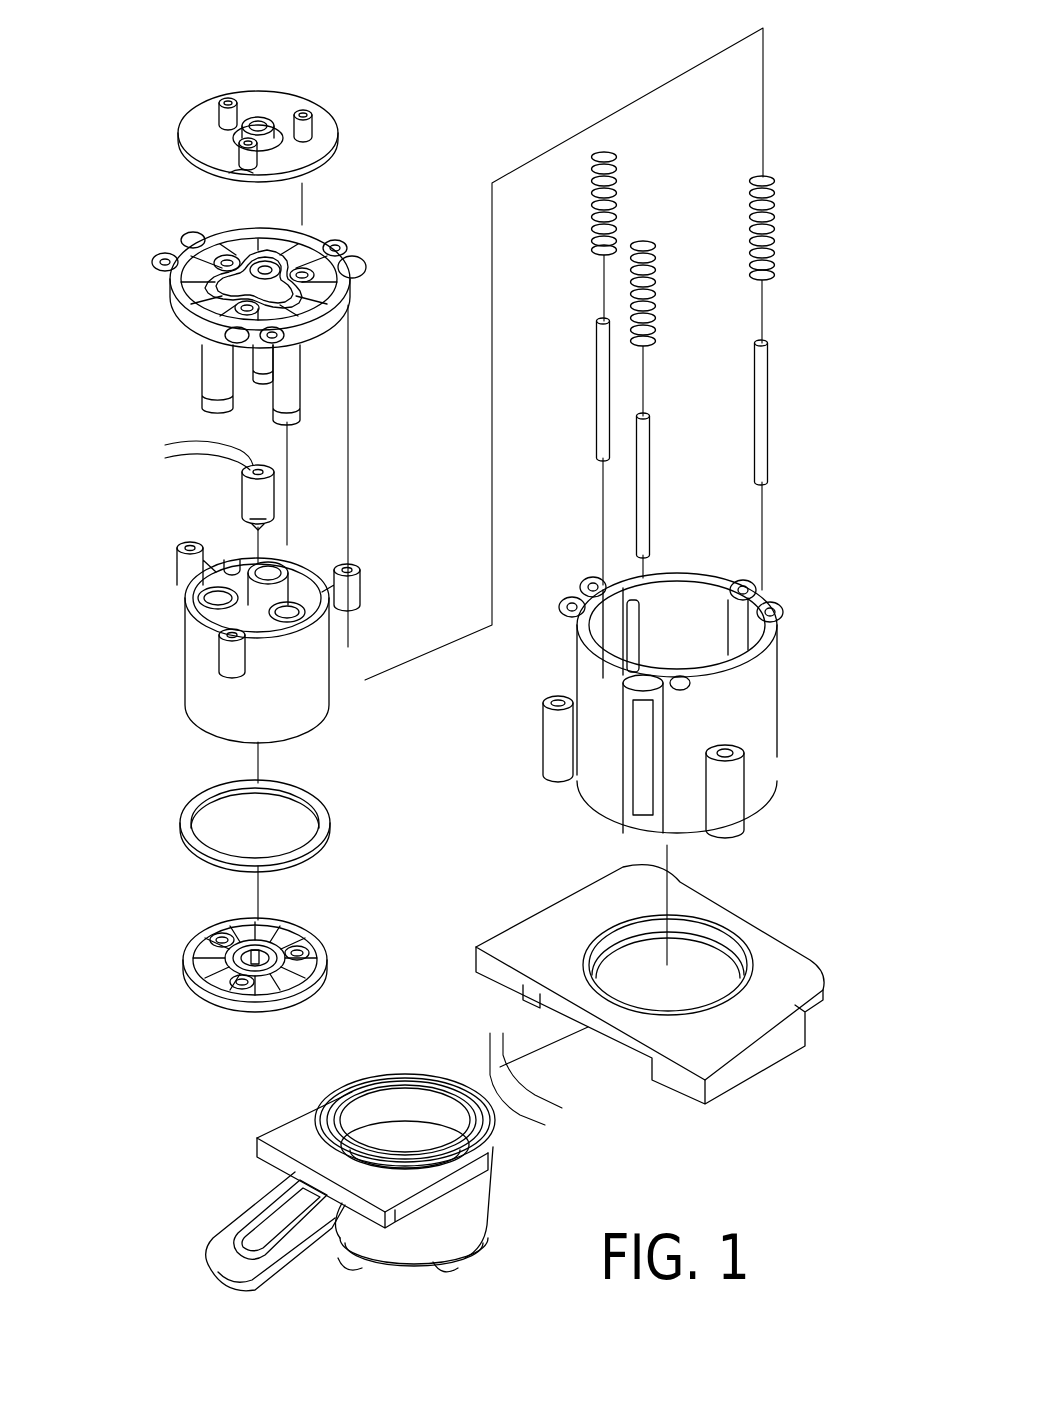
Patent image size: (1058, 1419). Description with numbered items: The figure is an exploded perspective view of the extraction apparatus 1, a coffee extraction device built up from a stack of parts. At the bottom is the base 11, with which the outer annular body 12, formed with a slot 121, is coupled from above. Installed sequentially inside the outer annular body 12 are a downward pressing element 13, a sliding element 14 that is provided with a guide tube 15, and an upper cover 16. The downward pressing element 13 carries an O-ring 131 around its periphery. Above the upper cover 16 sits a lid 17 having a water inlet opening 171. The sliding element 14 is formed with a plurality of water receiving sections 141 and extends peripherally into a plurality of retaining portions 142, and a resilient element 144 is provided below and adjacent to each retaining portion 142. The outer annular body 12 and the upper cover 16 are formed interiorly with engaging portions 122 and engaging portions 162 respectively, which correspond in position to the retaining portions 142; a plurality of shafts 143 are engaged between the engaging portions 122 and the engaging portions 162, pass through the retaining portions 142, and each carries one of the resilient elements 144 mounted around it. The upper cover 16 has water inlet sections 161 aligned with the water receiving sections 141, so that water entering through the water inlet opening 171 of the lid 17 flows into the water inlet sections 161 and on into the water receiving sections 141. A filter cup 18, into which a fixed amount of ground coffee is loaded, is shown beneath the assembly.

The extraction apparatus 1 is at (375, 763).
The base 11 is at (762, 1058).
The outer annular body 12 is at (666, 664).
The slot 121 is at (640, 625).
The engaging portions 122 is at (755, 770).
The downward pressing element 13 is at (192, 968).
The O-ring 131 is at (188, 822).
The sliding element 14 is at (261, 625).
The water receiving sections 141 is at (214, 598).
The retaining portions 142 is at (358, 585).
The shafts 143 is at (772, 415).
The resilient element 144 is at (778, 195).
The guide tube 15 is at (250, 500).
The upper cover 16 is at (257, 303).
The water inlet sections 161 is at (267, 263).
The engaging portions 162 is at (363, 273).
The lid 17 is at (227, 106).
The water inlet opening 171 is at (260, 122).
The filter cup 18 is at (383, 1075).